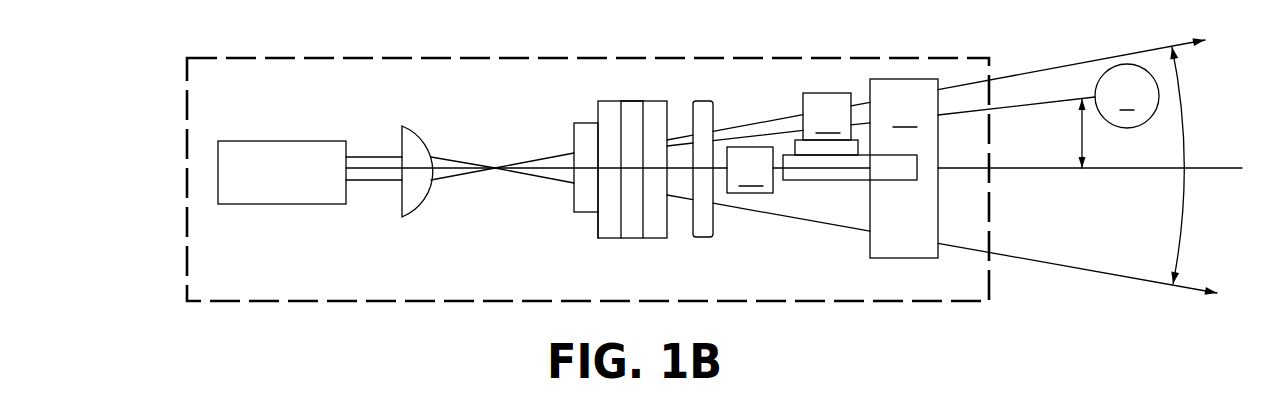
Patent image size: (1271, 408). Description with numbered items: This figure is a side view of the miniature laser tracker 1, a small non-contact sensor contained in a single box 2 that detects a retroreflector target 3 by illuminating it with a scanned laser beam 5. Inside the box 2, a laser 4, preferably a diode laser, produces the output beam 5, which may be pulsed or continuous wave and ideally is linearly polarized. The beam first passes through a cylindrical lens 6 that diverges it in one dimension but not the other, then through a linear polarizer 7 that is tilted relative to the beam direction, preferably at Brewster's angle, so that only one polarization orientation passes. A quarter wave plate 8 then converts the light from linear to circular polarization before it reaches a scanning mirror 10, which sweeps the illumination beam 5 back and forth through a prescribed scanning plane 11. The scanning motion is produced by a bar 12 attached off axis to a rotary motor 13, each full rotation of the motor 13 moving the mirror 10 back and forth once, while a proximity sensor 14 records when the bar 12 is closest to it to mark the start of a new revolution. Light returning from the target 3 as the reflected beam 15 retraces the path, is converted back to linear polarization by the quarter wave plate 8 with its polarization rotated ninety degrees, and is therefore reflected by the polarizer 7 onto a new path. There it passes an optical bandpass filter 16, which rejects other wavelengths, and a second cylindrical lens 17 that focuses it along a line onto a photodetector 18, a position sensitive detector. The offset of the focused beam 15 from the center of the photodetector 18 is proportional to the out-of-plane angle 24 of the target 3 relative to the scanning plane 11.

The miniature laser tracker 1 is at (392, 33).
The box 2 is at (270, 58).
The retroreflector target 3 is at (1127, 96).
The laser 4 is at (268, 140).
The laser beam 5 is at (367, 182).
The cylindrical lens 6 is at (420, 134).
The polarizer 7 is at (653, 238).
The quarter wave plate 8 is at (702, 238).
The scanning mirror 10 is at (904, 168).
The scanning plane 11 is at (1207, 167).
The bar 12 is at (845, 180).
The rotary motor 13 is at (826, 124).
The proximity sensor 14 is at (750, 170).
The reflected beam 15 is at (1043, 101).
The optical bandpass filter 16 is at (632, 100).
The cylindrical lens 17 is at (597, 228).
The photodetector 18 is at (574, 201).
The out-of-plane angle 24 is at (1080, 141).